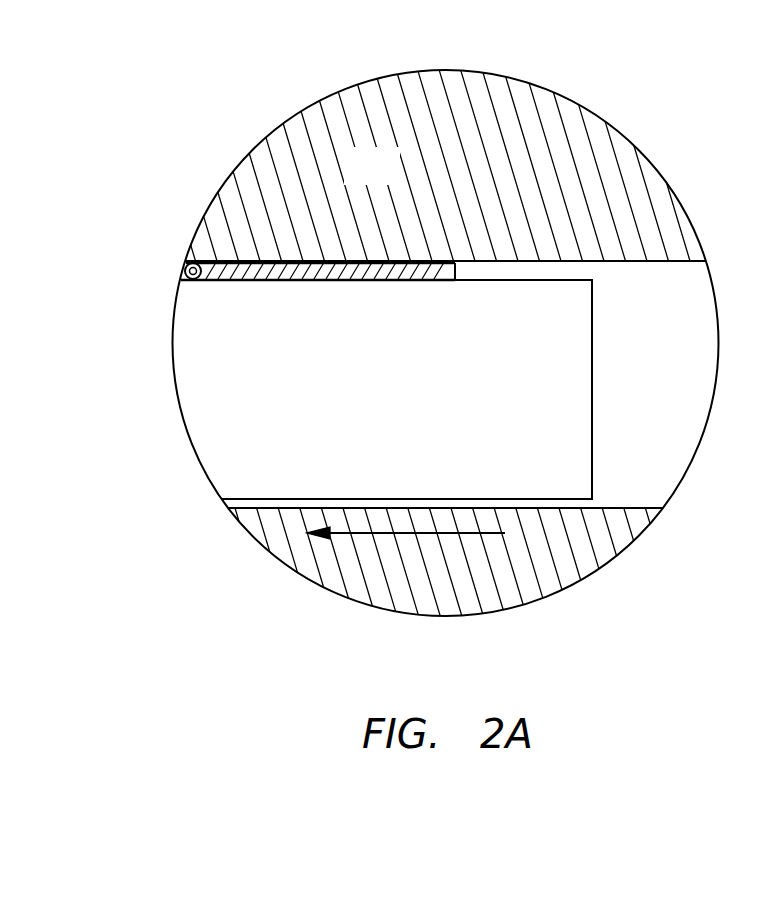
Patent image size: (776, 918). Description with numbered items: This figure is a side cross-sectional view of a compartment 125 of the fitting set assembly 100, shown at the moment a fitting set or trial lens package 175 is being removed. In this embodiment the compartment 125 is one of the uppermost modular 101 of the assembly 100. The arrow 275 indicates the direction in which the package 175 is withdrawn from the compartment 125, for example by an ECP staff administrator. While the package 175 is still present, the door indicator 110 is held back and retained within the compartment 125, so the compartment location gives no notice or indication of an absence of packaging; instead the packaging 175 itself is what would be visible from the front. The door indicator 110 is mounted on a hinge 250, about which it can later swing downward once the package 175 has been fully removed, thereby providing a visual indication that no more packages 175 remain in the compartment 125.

The fitting set assembly 100 is at (602, 136).
The uppermost modular 101 is at (393, 181).
The door indicator 110 is at (393, 283).
The compartment 125 is at (684, 401).
The trial lens package 175 is at (447, 401).
The hinge 250 is at (186, 262).
The arrow 275 is at (364, 532).